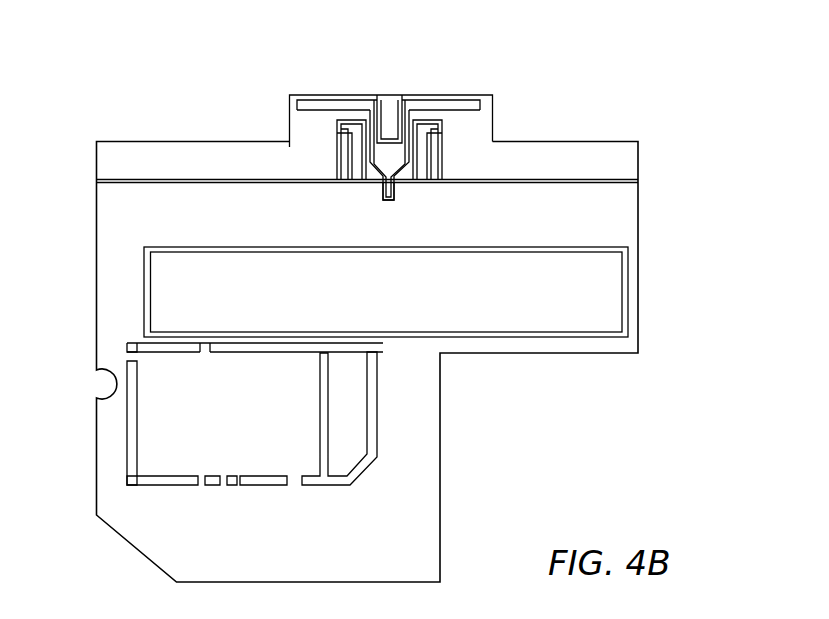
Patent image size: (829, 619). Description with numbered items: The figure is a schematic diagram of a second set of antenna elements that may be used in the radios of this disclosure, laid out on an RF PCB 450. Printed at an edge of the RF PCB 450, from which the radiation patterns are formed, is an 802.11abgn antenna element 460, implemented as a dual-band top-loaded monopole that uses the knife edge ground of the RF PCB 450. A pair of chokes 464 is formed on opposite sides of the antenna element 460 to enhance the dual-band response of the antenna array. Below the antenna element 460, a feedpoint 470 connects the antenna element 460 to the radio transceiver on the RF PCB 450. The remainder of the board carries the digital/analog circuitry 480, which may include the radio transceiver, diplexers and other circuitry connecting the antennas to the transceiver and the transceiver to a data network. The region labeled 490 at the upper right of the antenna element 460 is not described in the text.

The RF PCB 450 is at (428, 557).
The 802.11abgn antenna element 460 is at (420, 96).
The chokes 464 is at (352, 152).
The feedpoint 470 is at (400, 190).
The digital/analog circuitry 480 is at (208, 287).
The antenna substrate 490 is at (493, 109).